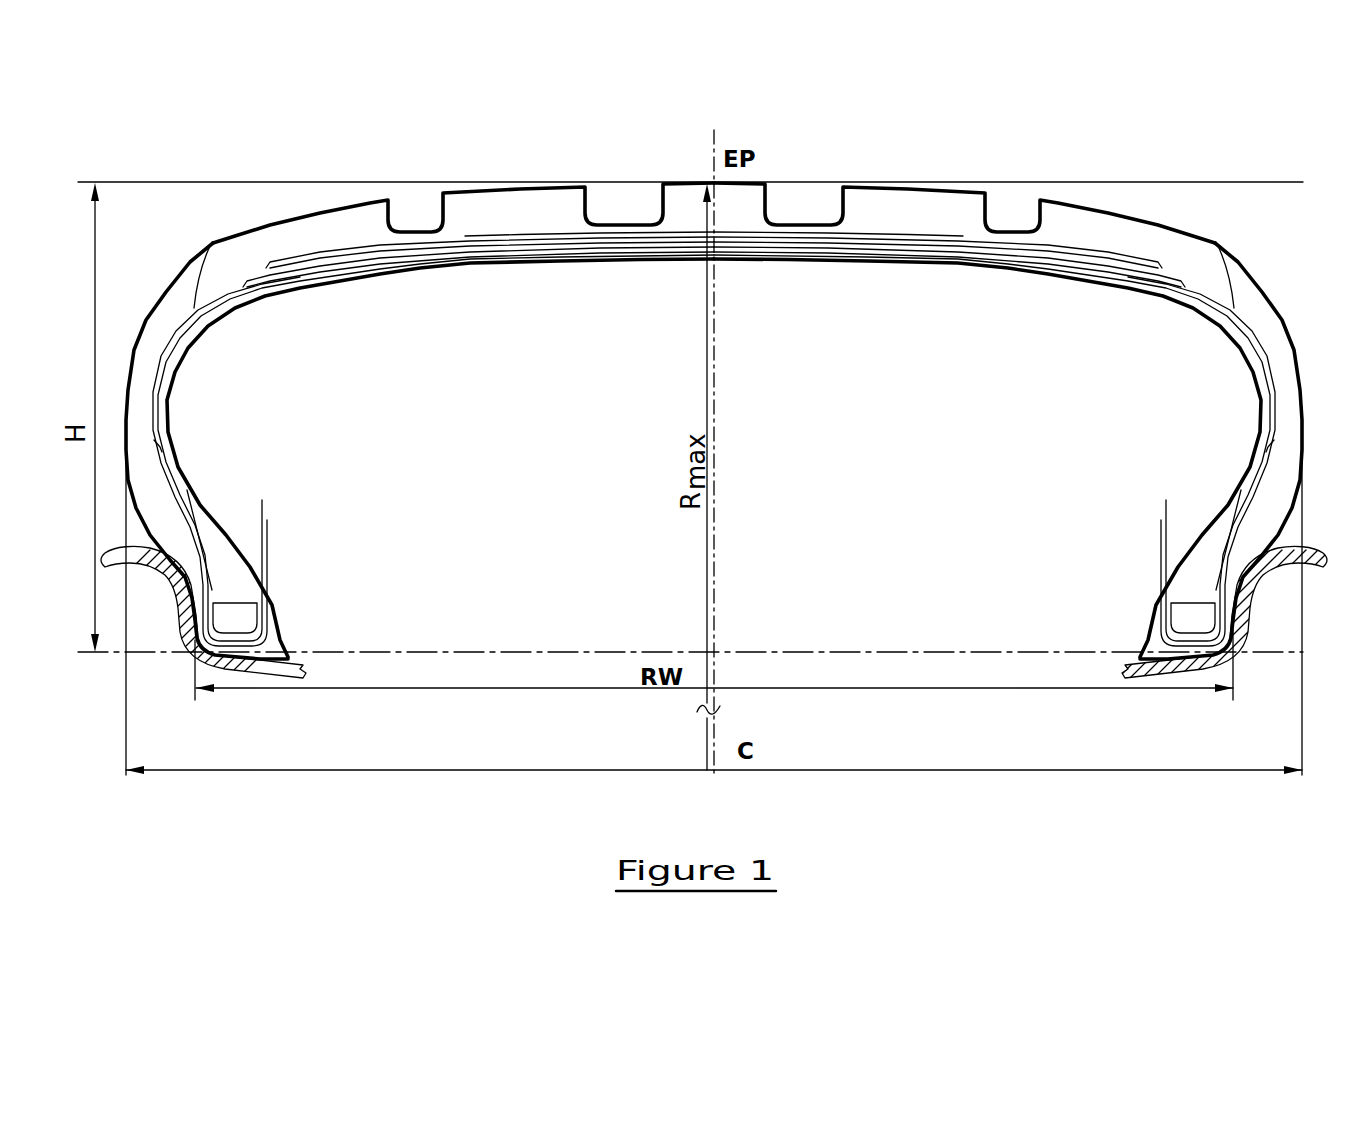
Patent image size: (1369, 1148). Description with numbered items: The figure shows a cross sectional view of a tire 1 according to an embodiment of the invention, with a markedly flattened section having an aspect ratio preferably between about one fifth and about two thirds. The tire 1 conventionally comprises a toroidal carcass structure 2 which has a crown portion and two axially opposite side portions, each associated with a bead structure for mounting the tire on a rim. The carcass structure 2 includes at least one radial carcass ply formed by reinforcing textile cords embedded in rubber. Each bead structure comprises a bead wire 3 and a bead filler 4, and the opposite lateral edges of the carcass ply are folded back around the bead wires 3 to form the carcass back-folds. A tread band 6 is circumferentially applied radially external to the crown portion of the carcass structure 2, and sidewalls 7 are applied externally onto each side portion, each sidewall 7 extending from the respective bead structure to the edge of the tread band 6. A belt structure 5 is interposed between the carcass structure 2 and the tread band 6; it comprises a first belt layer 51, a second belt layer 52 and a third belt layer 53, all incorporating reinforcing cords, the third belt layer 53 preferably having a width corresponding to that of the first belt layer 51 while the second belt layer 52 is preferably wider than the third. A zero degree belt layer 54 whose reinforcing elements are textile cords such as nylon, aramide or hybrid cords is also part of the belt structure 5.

The tire 1 is at (1262, 240).
The carcass structure 2 is at (160, 392).
The bead wire 3 is at (1207, 560).
The bead filler 4 is at (1190, 615).
The belt structure 5 is at (533, 236).
The tread band 6 is at (867, 199).
The sidewall 7 is at (1283, 467).
The first belt layer 51 is at (565, 244).
The second belt layer 52 is at (483, 248).
The third belt layer 53 is at (578, 236).
The zero degree belt layer 54 is at (465, 238).